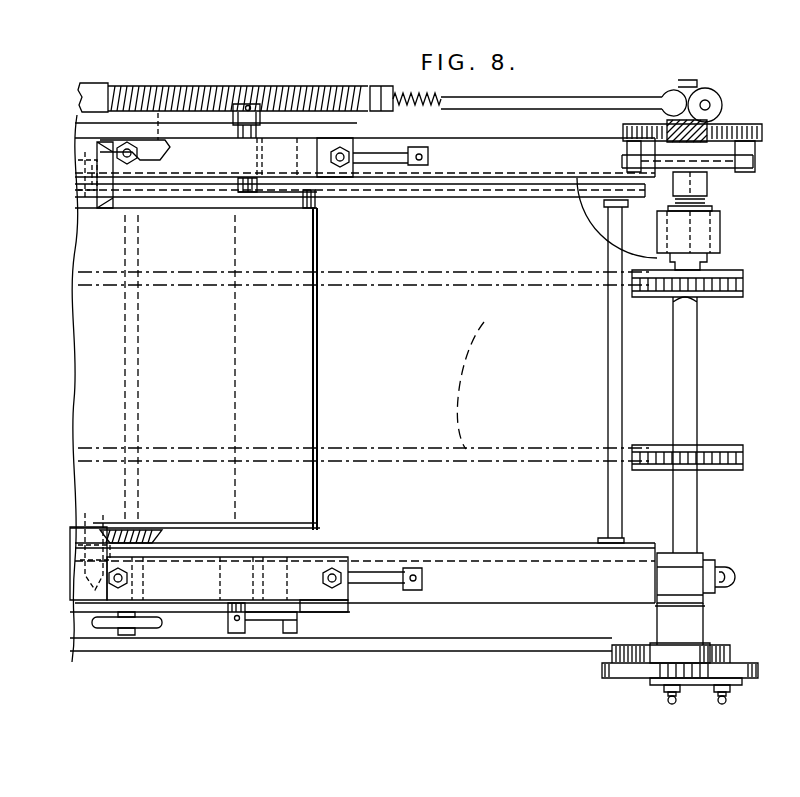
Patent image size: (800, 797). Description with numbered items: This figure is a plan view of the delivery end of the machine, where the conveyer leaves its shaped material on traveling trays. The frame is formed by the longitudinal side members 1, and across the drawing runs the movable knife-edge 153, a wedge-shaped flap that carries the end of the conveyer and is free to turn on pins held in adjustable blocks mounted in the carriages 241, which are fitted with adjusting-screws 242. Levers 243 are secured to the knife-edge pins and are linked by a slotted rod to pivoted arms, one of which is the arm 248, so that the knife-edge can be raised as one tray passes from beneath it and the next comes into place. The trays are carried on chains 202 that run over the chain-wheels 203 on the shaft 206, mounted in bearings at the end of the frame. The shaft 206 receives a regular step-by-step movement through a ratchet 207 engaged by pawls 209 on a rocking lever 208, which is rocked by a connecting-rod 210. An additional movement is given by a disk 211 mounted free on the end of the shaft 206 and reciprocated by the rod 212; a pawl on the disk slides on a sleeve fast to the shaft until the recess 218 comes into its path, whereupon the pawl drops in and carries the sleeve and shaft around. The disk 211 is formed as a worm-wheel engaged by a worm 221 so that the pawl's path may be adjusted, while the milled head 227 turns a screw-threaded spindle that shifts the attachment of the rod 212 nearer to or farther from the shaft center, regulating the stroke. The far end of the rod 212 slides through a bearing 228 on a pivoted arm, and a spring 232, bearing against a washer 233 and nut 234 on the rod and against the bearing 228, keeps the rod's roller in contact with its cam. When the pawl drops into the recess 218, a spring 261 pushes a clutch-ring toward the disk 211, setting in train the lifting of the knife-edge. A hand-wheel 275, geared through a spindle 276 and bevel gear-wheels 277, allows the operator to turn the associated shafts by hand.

The longitudinal side member 1 is at (528, 169).
The knife-edge 153 is at (318, 366).
The chain 202 is at (455, 283).
The chain-wheel 203 is at (650, 274).
The shaft 206 is at (680, 373).
The ratchet 207 is at (682, 688).
The rocking lever 208 is at (690, 657).
The pawl 209 is at (628, 670).
The connecting-rod 210 is at (341, 657).
The disk 211 is at (730, 128).
The rod 212 is at (500, 103).
The recess 218 is at (100, 210).
The worm 221 is at (677, 120).
The milled head 227 is at (703, 98).
The sliding bearing 228 is at (96, 97).
The spring 232 is at (197, 86).
The washer 233 is at (380, 86).
The nut 234 is at (392, 106).
The carriage 241 is at (226, 369).
The adjusting-screw 242 is at (430, 157).
The lever 243 is at (260, 90).
The arm 248 is at (332, 612).
The spring 261 is at (706, 200).
The hand-wheel 275 is at (140, 627).
The spindle 276 is at (133, 368).
The bevel gear-wheel 277 is at (168, 86).